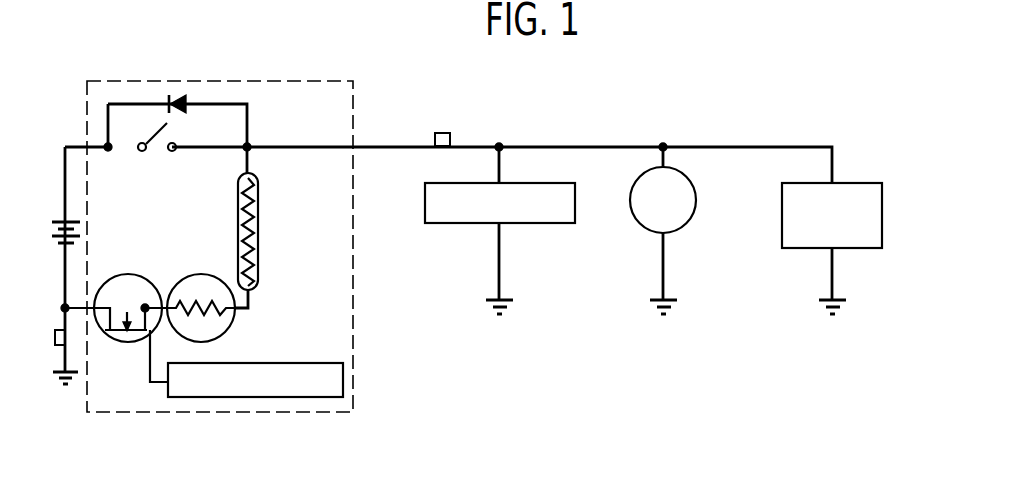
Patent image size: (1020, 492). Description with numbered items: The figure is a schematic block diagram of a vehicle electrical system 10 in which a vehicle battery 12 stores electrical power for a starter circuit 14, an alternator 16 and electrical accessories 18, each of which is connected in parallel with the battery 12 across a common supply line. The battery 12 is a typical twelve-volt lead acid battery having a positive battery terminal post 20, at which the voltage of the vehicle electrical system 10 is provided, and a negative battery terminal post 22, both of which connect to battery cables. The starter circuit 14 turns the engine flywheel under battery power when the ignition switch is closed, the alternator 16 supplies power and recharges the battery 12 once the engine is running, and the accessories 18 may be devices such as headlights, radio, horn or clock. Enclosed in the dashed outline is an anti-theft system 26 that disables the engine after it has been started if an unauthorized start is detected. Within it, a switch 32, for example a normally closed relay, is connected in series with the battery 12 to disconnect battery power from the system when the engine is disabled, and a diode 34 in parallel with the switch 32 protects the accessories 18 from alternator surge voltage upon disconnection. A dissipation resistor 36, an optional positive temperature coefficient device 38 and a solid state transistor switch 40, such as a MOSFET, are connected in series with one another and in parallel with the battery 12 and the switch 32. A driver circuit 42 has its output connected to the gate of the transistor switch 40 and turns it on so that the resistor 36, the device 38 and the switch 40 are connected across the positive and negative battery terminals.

The vehicle electrical system 10 is at (606, 92).
The vehicle battery 12 is at (52, 221).
The starter circuit 14 is at (805, 249).
The alternator 16 is at (697, 197).
The electrical accessories 18 is at (541, 223).
The positive battery terminal post 20 is at (441, 132).
The negative battery terminal post 22 is at (55, 338).
The anti-theft system 26 is at (286, 81).
The switch 32 is at (151, 152).
The diode 34 is at (177, 90).
The dissipation resistor 36 is at (258, 223).
The positive temperature coefficient (PTC) device 38 is at (201, 273).
The solid state transistor switch 40 is at (131, 275).
The driver circuit 42 is at (300, 362).